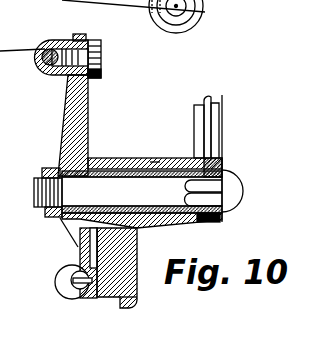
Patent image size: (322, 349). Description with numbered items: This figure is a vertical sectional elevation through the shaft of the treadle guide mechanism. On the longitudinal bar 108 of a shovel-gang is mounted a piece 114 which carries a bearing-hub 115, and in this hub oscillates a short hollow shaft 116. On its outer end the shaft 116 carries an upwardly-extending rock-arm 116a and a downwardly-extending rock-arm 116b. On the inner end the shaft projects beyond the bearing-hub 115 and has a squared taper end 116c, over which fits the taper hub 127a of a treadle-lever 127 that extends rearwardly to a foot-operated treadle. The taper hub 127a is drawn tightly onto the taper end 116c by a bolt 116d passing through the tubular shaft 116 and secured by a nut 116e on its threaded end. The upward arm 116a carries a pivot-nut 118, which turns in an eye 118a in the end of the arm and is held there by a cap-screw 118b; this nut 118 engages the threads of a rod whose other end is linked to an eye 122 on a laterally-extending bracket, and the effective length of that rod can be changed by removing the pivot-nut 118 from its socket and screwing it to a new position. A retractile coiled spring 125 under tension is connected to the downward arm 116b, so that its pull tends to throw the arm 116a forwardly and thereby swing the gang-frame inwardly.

The longitudinal bar 108 is at (104, 296).
The piece 114 is at (136, 240).
The bearing-hub 115 is at (150, 163).
The short hollow shaft 116 is at (115, 168).
The upwardly-extending rock-arm 116a is at (90, 113).
The downwardly-extending rock-arm 116b is at (78, 246).
The squared taper end 116c is at (216, 222).
The bolt 116d is at (142, 191).
The nut 116e is at (50, 171).
The pivot-nut 118 is at (50, 39).
The eye 118a is at (78, 36).
The cap-screw 118b is at (101, 55).
The eye 122 is at (196, 13).
The retractile coiled spring 125 is at (67, 297).
The treadle-lever 127 is at (220, 127).
The taper hub 127a is at (223, 165).